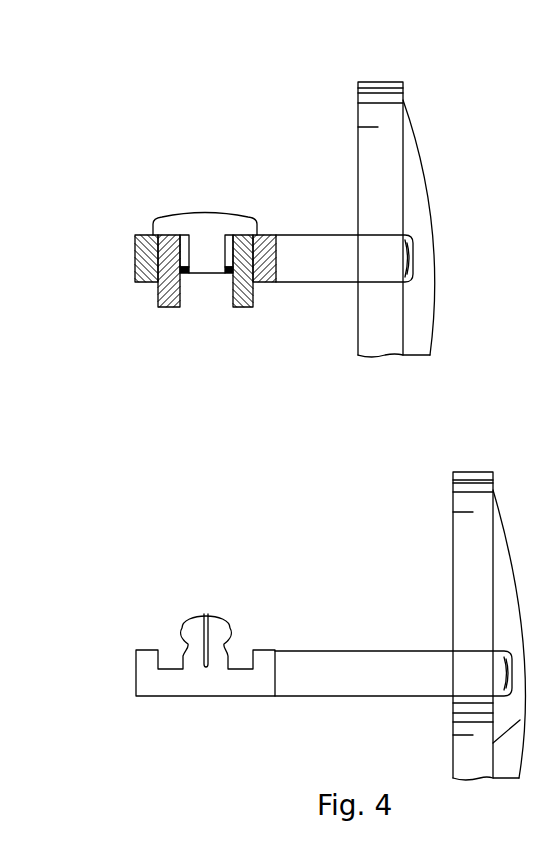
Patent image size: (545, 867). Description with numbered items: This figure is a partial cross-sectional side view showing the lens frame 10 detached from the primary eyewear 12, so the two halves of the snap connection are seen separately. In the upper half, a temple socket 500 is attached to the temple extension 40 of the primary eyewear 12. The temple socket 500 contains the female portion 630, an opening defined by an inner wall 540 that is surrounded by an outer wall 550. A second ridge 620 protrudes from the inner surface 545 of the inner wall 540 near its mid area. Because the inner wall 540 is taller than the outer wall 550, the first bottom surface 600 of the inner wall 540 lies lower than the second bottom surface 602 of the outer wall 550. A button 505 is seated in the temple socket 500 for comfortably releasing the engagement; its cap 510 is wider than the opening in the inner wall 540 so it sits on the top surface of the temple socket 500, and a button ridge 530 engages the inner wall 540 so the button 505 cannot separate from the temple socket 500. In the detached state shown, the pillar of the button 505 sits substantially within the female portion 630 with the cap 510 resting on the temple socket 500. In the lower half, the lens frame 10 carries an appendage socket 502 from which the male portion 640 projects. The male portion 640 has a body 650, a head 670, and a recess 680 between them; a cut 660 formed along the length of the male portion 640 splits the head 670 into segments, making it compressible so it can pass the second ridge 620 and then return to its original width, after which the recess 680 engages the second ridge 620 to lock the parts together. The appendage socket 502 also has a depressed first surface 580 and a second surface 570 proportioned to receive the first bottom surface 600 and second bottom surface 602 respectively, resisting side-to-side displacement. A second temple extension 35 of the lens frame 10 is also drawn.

The lens frame 10 is at (471, 464).
The primary eyewear 12 is at (393, 78).
The first shaft 35 is at (390, 650).
The temple extension 40 is at (334, 247).
The temple socket 500 is at (192, 283).
The appendage socket 502 is at (199, 639).
The button 505 is at (212, 206).
The cap 510 is at (182, 222).
The button ridge 530 is at (197, 275).
The inner wall 540 is at (253, 298).
The inner surface 545 is at (231, 290).
The outer wall 550 is at (270, 236).
The second surface 570 is at (268, 652).
The first surface 580 is at (240, 669).
The first bottom surface 600 is at (162, 307).
The second bottom surface 602 is at (140, 283).
The second ridge 620 is at (227, 275).
The female portion 630 is at (188, 280).
The male portion 640 is at (232, 620).
The body 650 is at (192, 663).
The cut 660 is at (212, 622).
The head 670 is at (200, 622).
The recess 680 is at (227, 640).